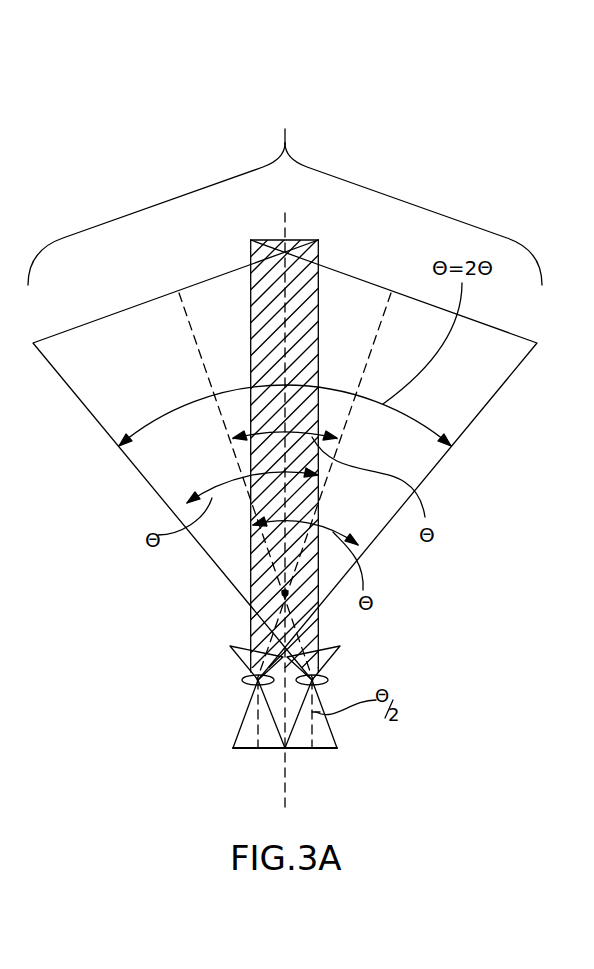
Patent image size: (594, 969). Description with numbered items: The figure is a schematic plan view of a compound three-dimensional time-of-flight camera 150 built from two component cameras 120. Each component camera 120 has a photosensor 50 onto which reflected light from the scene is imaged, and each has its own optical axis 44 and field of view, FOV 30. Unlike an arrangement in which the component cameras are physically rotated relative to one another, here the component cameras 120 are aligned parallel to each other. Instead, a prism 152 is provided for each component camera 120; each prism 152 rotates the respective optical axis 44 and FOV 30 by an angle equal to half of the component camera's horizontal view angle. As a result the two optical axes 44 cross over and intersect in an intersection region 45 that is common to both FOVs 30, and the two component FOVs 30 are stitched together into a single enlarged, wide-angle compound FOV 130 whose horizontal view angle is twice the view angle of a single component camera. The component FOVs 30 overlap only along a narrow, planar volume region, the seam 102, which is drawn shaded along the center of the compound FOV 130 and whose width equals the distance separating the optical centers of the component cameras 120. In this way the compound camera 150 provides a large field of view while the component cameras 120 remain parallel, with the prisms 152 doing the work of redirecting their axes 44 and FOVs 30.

The compound 3D TOF camera 150 is at (123, 190).
The compound FOV 130 is at (287, 118).
The seam 102 is at (266, 297).
The FOV 30 is at (147, 277).
The optical axis 44 is at (187, 329).
The intersection region 45 is at (282, 593).
The prism 152 is at (244, 651).
The component camera 120 is at (223, 715).
The photosensor 50 is at (245, 750).